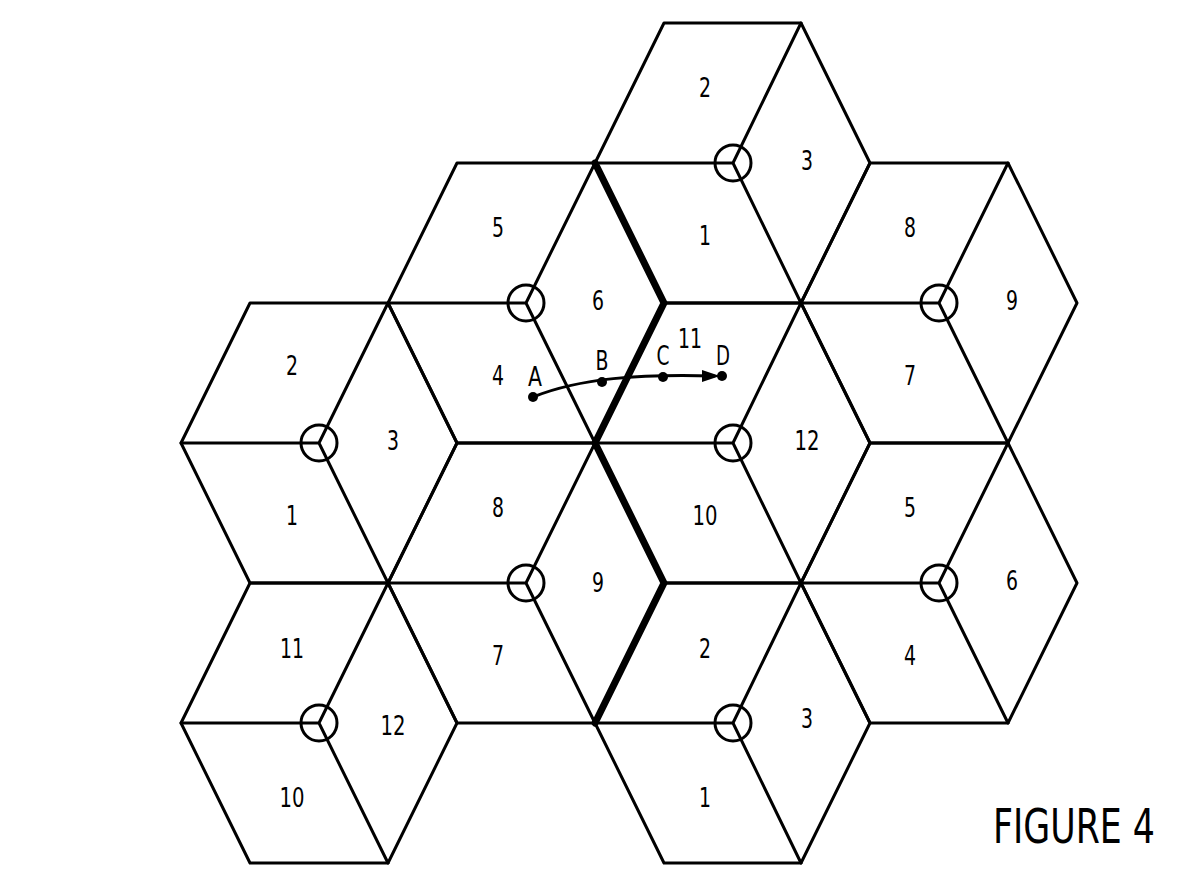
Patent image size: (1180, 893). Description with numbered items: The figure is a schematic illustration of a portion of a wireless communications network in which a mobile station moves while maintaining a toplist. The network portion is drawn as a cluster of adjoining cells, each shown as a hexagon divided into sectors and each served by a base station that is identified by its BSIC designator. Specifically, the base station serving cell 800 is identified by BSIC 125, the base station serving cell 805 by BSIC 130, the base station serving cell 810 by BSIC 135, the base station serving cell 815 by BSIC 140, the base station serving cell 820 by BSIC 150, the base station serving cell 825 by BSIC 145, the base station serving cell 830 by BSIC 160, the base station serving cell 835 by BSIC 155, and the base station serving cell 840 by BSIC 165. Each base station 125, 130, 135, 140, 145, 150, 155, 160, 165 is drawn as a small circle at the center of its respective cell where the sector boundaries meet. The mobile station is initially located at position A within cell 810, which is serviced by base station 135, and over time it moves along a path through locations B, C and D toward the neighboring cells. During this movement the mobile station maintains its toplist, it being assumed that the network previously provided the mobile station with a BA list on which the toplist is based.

The cell 800 is at (216, 375).
The cell 805 is at (203, 680).
The cell 810 is at (425, 227).
The cell 815 is at (513, 725).
The cell 820 is at (629, 92).
The cell 825 is at (758, 302).
The cell 830 is at (834, 800).
The cell 835 is at (935, 162).
The cell 840 is at (943, 725).
The base station 125 is at (302, 433).
The base station 130 is at (338, 724).
The base station 135 is at (509, 294).
The base station 140 is at (543, 583).
The base station 145 is at (752, 441).
The base station 150 is at (716, 153).
The base station 155 is at (958, 300).
The base station 160 is at (752, 721).
The base station 165 is at (957, 582).